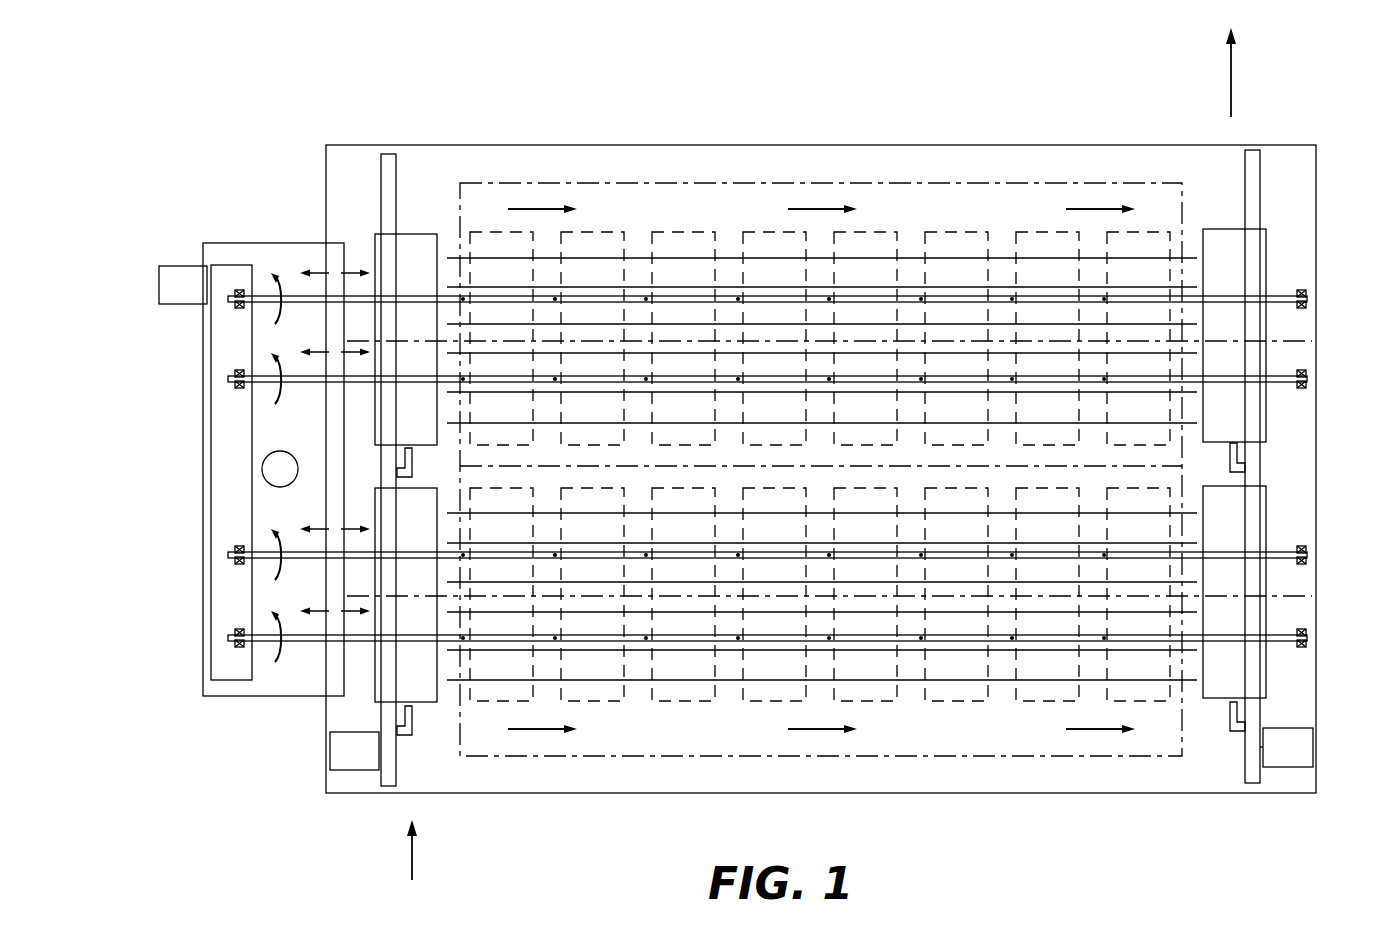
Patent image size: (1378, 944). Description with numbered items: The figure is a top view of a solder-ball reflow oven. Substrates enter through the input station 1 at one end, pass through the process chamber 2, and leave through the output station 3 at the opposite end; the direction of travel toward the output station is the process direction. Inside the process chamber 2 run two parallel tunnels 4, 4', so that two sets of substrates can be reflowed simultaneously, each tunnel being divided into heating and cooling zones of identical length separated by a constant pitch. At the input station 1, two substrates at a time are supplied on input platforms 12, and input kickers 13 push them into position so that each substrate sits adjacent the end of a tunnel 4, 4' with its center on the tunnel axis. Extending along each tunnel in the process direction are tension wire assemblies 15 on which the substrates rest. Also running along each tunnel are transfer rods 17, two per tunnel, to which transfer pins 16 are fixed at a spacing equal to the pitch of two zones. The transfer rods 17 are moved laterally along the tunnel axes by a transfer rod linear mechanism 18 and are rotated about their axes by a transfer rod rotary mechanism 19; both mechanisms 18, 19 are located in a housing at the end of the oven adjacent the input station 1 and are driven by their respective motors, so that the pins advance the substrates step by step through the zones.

The input station 1 is at (412, 863).
The process chamber 2 is at (702, 756).
The output station 3 is at (1233, 78).
The tunnel 4 is at (842, 225).
The tunnel 4' is at (847, 716).
The input platform 12 is at (415, 690).
The input kicker 13 is at (1253, 772).
The tension wire assembly 15 is at (1193, 680).
The transfer pin 16 is at (645, 298).
The transfer rod 17 is at (313, 387).
The transfer rod linear mechanism 18 is at (267, 685).
The transfer rod rotary mechanism 19 is at (232, 342).